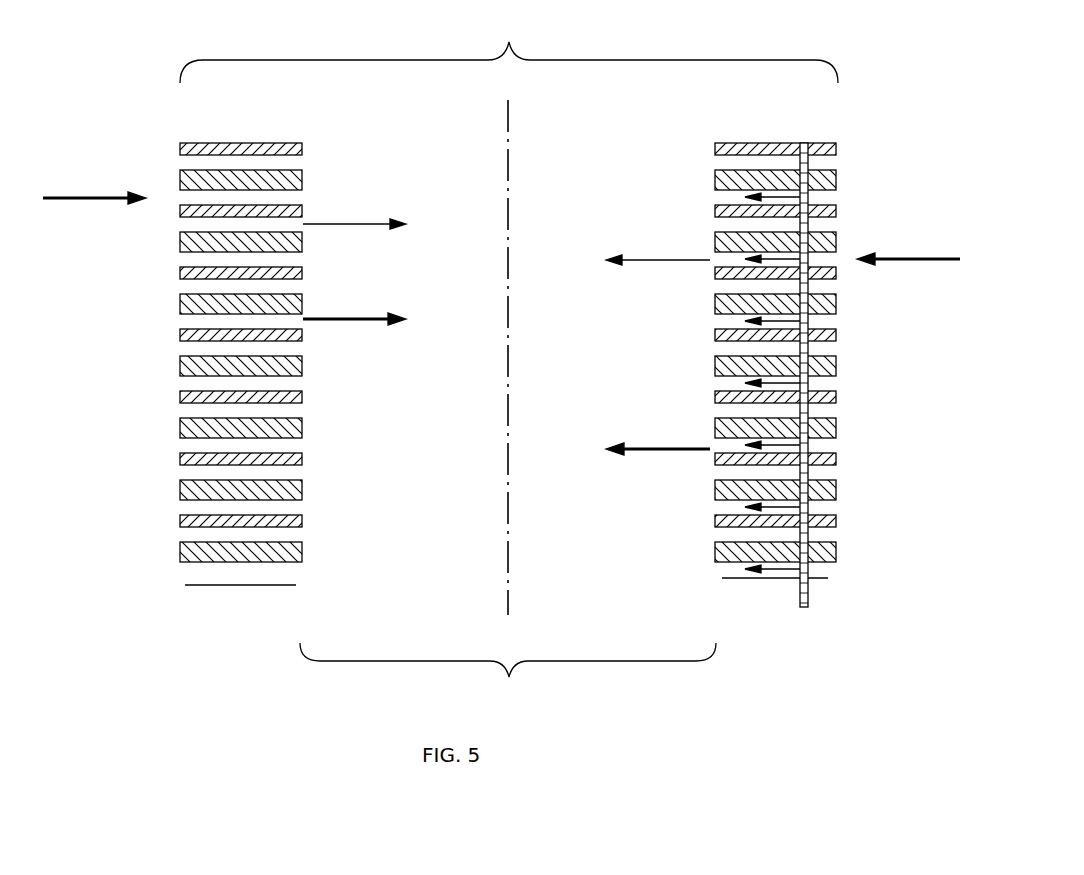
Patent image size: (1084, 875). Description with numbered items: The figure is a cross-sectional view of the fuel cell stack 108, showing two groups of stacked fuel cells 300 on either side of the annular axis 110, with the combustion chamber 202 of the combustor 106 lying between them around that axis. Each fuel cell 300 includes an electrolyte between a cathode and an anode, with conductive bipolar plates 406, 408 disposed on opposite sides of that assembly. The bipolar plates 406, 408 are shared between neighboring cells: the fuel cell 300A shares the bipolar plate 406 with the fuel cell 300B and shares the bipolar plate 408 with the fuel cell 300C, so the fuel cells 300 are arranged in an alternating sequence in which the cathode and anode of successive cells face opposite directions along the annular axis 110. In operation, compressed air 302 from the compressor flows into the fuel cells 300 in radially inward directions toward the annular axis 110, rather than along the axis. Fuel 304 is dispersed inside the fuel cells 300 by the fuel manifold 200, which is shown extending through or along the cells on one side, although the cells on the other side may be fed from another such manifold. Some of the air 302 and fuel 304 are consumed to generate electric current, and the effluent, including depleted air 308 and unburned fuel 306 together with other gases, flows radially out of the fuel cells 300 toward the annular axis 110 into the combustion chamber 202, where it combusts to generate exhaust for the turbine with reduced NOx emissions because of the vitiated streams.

The fuel cell stack 108 is at (509, 47).
The combustor 106 is at (508, 674).
The annular axis 110 is at (510, 330).
The combustion chamber 202 is at (560, 394).
The fuel manifold 200 is at (809, 598).
The fuel cell 300 is at (146, 210).
The fuel cell 300A is at (165, 397).
The fuel cell 300B is at (153, 334).
The fuel cell 300C is at (148, 458).
The compressed air 302 is at (93, 196).
The fuel 304 is at (806, 368).
The unburned fuel 306 is at (351, 317).
The depleted air 308 is at (351, 222).
The bipolar plate 406 is at (303, 396).
The bipolar plate 408 is at (303, 458).